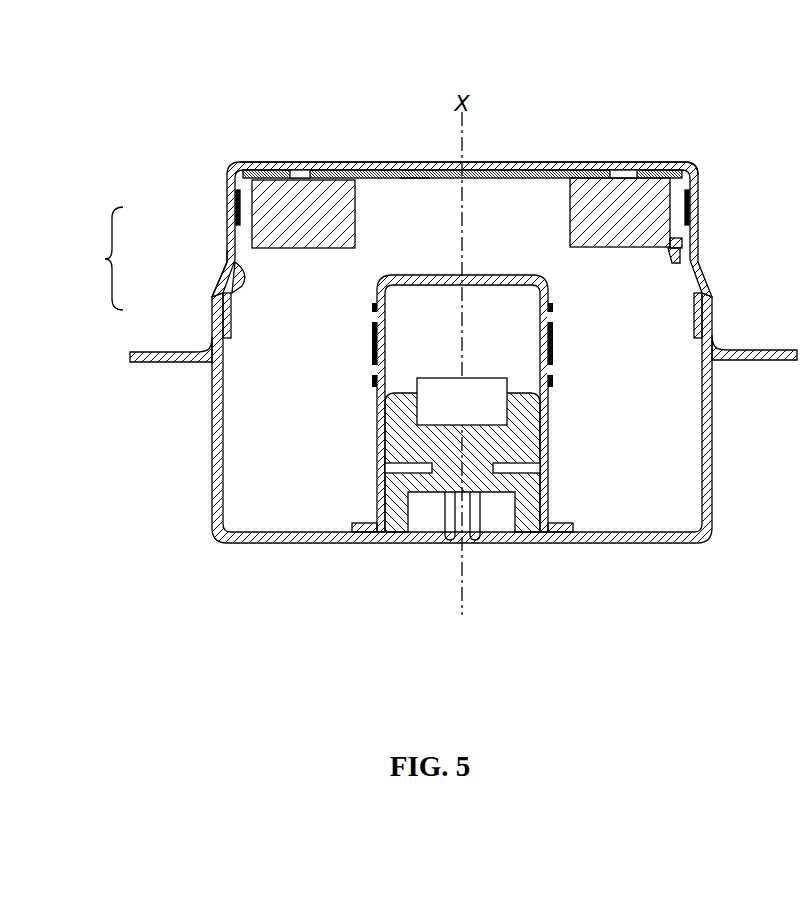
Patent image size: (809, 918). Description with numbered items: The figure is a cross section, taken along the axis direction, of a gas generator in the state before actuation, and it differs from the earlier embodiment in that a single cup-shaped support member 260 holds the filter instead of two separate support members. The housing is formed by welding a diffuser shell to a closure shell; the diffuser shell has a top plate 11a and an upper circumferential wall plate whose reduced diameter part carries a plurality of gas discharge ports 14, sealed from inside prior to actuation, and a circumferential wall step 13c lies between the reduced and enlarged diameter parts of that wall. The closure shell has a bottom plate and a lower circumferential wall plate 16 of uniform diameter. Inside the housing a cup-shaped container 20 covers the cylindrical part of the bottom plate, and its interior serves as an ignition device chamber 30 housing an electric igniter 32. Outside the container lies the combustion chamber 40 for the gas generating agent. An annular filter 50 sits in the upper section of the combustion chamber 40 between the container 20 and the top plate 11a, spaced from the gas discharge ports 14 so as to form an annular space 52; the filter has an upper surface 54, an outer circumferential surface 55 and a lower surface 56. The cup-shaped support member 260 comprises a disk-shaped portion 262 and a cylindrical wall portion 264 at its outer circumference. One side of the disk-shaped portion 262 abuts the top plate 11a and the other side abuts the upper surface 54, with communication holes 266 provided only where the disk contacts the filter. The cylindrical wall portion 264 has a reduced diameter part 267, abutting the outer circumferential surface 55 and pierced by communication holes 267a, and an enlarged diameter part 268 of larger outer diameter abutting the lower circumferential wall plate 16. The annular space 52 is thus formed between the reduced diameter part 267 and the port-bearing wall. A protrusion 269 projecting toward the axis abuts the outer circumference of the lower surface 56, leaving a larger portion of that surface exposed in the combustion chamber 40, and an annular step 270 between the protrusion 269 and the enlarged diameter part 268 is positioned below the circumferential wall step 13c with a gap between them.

The top plate 11a is at (523, 162).
The circumferential wall step 13c is at (712, 273).
The gas discharge ports 14 is at (695, 207).
The lower circumferential wall plate 16 is at (215, 477).
The cup-shaped container 20 is at (431, 272).
The ignition device chamber 30 is at (495, 324).
The electric igniter 32 is at (462, 459).
The combustion chamber 40 is at (615, 383).
The annular filter 50 is at (580, 215).
The annular space 52 is at (682, 178).
The upper surface of the filter 54 is at (598, 169).
The outer circumferential surface of the filter 55 is at (683, 243).
The lower surface of the filter 56 is at (317, 252).
The cup-shaped support member 260 is at (412, 184).
The disk-shaped portion 262 is at (482, 178).
The cylindrical wall portion 264 is at (143, 258).
The communication holes 266 is at (299, 169).
The reduced diameter part 267 is at (233, 183).
The communication holes 267a is at (678, 193).
The enlarged diameter part 268 is at (208, 320).
The protrusion 269 is at (668, 254).
The annular step 270 is at (243, 282).